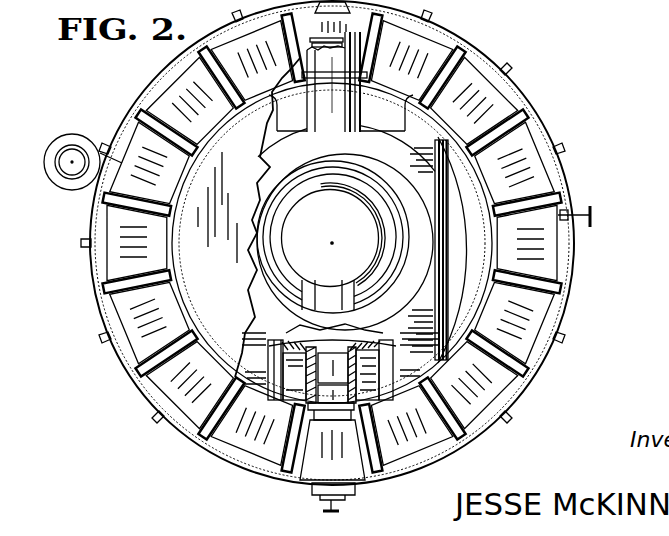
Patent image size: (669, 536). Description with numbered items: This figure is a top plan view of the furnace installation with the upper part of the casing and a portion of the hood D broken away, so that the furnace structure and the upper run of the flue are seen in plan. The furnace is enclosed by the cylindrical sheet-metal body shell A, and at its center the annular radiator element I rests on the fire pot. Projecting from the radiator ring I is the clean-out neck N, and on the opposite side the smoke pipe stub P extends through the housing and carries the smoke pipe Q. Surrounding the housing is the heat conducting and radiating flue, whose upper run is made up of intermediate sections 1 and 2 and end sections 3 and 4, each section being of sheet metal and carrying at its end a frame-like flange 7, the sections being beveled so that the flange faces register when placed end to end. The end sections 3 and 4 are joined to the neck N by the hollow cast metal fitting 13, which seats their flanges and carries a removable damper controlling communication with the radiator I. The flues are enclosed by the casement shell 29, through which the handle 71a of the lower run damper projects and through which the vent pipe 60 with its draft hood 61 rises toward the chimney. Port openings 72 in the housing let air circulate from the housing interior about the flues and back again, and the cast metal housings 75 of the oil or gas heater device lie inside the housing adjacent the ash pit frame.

The intermediate section 1 is at (545, 318).
The intermediate section 2 is at (503, 395).
The end section 3 is at (397, 460).
The end section 4 is at (263, 458).
The hollow cast metal fitting 13 is at (312, 467).
The casement shell 29 is at (535, 112).
The vent pipe 60 is at (97, 182).
The draft hood 61 is at (53, 175).
The handle 71a is at (593, 214).
The port opening 72 is at (483, 271).
The cast metal housing 75 is at (446, 192).
The flange 7 is at (331, 503).
The body shell A is at (275, 393).
The hood D is at (200, 310).
The annular radiator element I is at (391, 184).
The clean-out neck N is at (310, 358).
The smoke pipe stub P is at (353, 104).
The smoke pipe Q is at (350, 63).